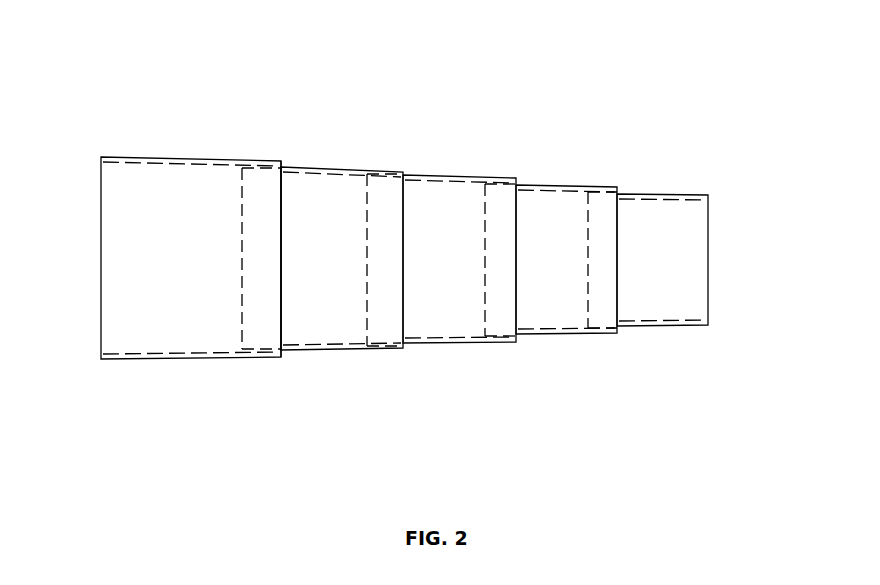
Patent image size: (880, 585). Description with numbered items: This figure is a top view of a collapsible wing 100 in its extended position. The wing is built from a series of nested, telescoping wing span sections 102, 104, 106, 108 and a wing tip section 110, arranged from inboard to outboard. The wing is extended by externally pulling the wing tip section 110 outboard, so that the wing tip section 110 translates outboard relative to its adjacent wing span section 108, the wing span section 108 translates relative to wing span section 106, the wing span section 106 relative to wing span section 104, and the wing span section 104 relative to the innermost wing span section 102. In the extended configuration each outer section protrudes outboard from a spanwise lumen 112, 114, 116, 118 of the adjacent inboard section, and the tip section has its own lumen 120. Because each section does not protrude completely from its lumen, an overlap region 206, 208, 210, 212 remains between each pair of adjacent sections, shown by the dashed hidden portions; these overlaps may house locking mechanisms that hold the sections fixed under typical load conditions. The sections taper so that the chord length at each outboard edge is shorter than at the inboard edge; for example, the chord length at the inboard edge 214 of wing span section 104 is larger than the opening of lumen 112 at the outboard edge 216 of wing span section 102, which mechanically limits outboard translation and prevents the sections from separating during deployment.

The collapsible wing 100 is at (401, 54).
The wing span section 102 is at (196, 228).
The wing span section 104 is at (359, 237).
The wing span section 106 is at (474, 246).
The wing span section 108 is at (589, 241).
The wing tip section 110 is at (699, 237).
The lumen 112 is at (191, 285).
The lumen 114 is at (348, 279).
The lumen 116 is at (471, 280).
The lumen 118 is at (587, 287).
The fifth section wall 120 is at (696, 285).
The overlap region 206 is at (226, 258).
The overlap region 208 is at (351, 260).
The overlap region 210 is at (464, 260).
The overlap region 212 is at (570, 260).
The inboard edge 214 is at (200, 258).
The outboard edge 216 is at (318, 259).